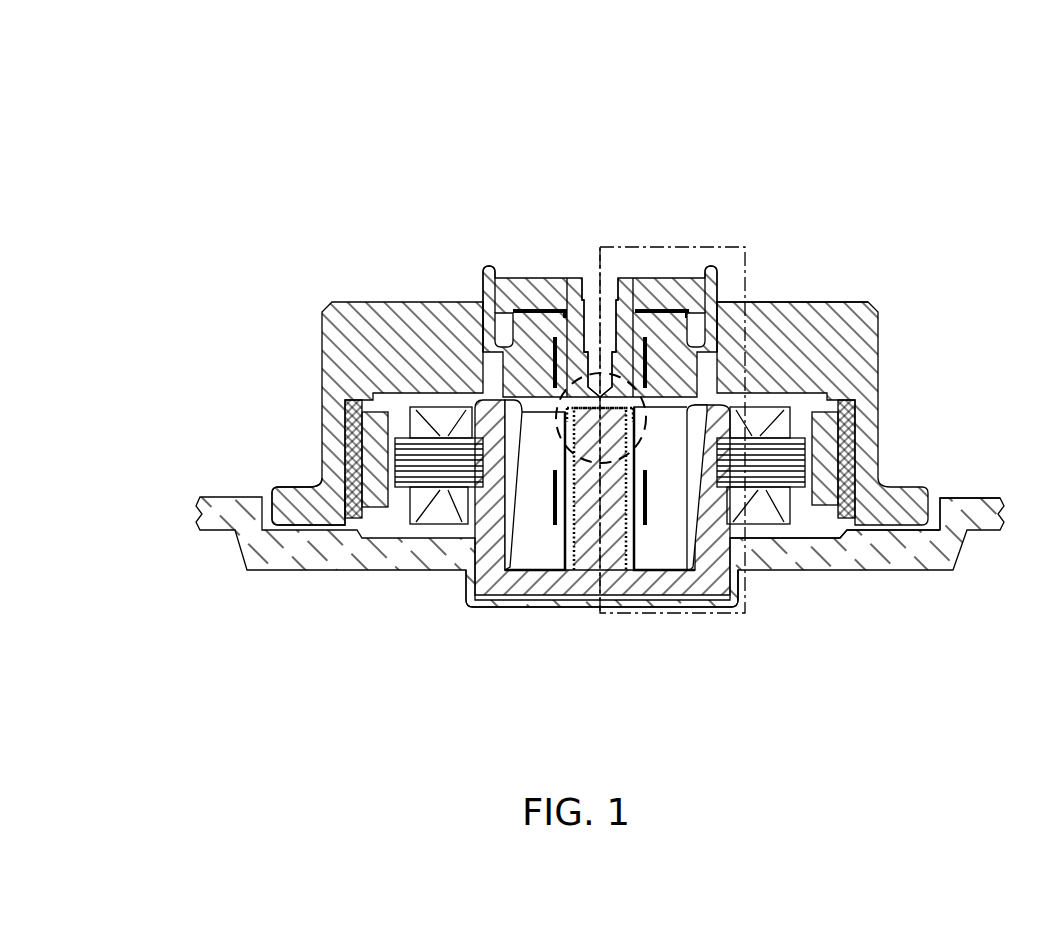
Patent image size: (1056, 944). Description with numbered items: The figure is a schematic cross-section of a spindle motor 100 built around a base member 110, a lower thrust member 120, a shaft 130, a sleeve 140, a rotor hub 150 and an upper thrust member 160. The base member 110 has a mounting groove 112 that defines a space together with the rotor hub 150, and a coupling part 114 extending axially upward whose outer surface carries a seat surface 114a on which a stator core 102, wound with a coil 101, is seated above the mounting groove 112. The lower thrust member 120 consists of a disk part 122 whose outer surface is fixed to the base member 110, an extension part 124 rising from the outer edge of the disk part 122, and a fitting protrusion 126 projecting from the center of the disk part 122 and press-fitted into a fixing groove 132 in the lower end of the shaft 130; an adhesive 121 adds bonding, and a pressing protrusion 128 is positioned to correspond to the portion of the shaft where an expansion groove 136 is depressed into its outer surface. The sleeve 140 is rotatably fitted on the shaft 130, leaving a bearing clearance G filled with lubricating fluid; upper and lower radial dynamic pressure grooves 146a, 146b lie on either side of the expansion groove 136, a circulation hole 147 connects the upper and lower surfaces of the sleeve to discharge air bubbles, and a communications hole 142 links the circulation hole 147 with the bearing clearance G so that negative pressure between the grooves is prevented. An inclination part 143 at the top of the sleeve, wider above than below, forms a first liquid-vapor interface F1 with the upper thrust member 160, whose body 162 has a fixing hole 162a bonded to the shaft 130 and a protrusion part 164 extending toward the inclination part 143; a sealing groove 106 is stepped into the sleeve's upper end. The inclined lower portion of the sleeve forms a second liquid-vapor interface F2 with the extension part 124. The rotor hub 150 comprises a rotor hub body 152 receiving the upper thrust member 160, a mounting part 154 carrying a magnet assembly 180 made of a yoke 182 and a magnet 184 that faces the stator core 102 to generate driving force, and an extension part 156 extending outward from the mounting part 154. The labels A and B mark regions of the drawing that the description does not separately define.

The spindle motor 100 is at (378, 114).
The coil 101 is at (430, 524).
The stator core 102 is at (382, 540).
The sealing groove 106 is at (548, 352).
The base member 110 is at (870, 558).
The mounting groove 112 is at (918, 528).
The coupling part 114 is at (718, 548).
The seat surface 114a is at (752, 472).
The lower thrust member 120 is at (563, 690).
The adhesive 121 is at (628, 560).
The disk part 122 is at (545, 587).
The extension part 124 is at (488, 545).
The fitting protrusion 126 is at (578, 560).
The pressing protrusion 128 is at (690, 350).
The shaft 130 is at (603, 335).
The fixing groove 132 is at (598, 548).
The expansion groove 136 is at (662, 395).
The sleeve 140 is at (533, 280).
The communications hole 142 is at (856, 325).
The inclination part 143 is at (481, 278).
The upper radial dynamic pressure groove 146a is at (518, 333).
The lower radial dynamic pressure groove 146b is at (416, 535).
The circulation hole 147 is at (808, 301).
The rotor hub 150 is at (205, 330).
The rotor hub body 152 is at (345, 345).
The mounting part 154 is at (345, 413).
The extension part 156 is at (290, 493).
The upper thrust member 160 is at (660, 140).
The fixing hole 162a is at (647, 300).
The body 162 is at (666, 330).
The protrusion part 164 is at (690, 330).
The magnet assembly 180 is at (982, 400).
The yoke 182 is at (855, 455).
The magnet 184 is at (855, 420).
The detail region A is at (325, 572).
The detail region B is at (768, 247).
The bearing clearance G is at (578, 398).
The first liquid-vapor interface F1 is at (503, 312).
The second liquid-vapor interface F2 is at (738, 545).